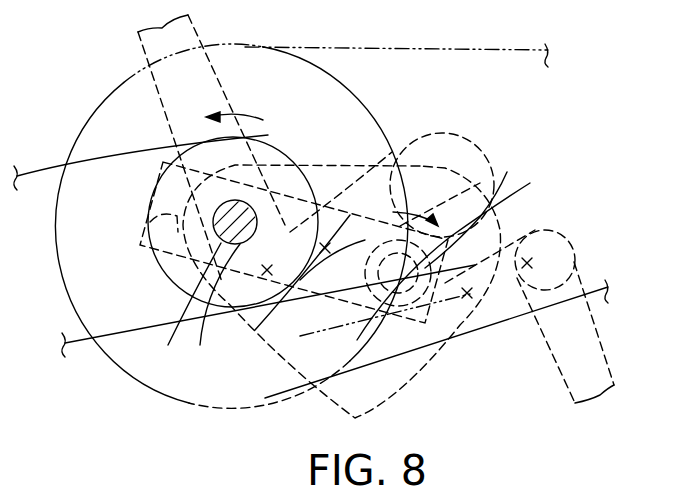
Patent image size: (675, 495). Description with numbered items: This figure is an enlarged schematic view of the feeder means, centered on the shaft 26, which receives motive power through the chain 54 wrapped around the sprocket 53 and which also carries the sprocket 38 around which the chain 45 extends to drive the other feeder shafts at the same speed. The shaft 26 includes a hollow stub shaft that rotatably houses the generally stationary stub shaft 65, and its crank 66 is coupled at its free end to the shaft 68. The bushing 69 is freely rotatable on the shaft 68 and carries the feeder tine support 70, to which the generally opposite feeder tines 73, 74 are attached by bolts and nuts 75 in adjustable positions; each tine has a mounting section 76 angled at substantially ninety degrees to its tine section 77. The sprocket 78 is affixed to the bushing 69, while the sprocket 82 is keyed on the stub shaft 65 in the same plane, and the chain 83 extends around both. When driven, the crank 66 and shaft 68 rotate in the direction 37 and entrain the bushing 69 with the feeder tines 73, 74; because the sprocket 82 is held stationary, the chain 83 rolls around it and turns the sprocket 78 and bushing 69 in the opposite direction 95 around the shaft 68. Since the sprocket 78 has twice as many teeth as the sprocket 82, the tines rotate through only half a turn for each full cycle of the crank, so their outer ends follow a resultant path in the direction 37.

The shaft 26 is at (188, 315).
The direction of rotation 37 is at (240, 104).
The sprocket 38 is at (163, 280).
The chain 45 is at (90, 345).
The sprocket 53 is at (376, 118).
The chain 54 is at (445, 50).
The stub shaft 65 is at (213, 352).
The crank 66 is at (403, 383).
The shaft 68 is at (457, 248).
The bushing 69 is at (492, 182).
The feeder tine support 70 is at (480, 148).
The feeder tine 73 is at (217, 87).
The feeder tine 74 is at (609, 372).
The bolts and nuts 75 is at (557, 265).
The mounting section 76 is at (517, 231).
The tine section 77 is at (165, 113).
The sprocket 78 is at (452, 140).
The sprocket 82 is at (150, 220).
The chain 83 is at (329, 166).
The opposite direction 95 is at (422, 204).